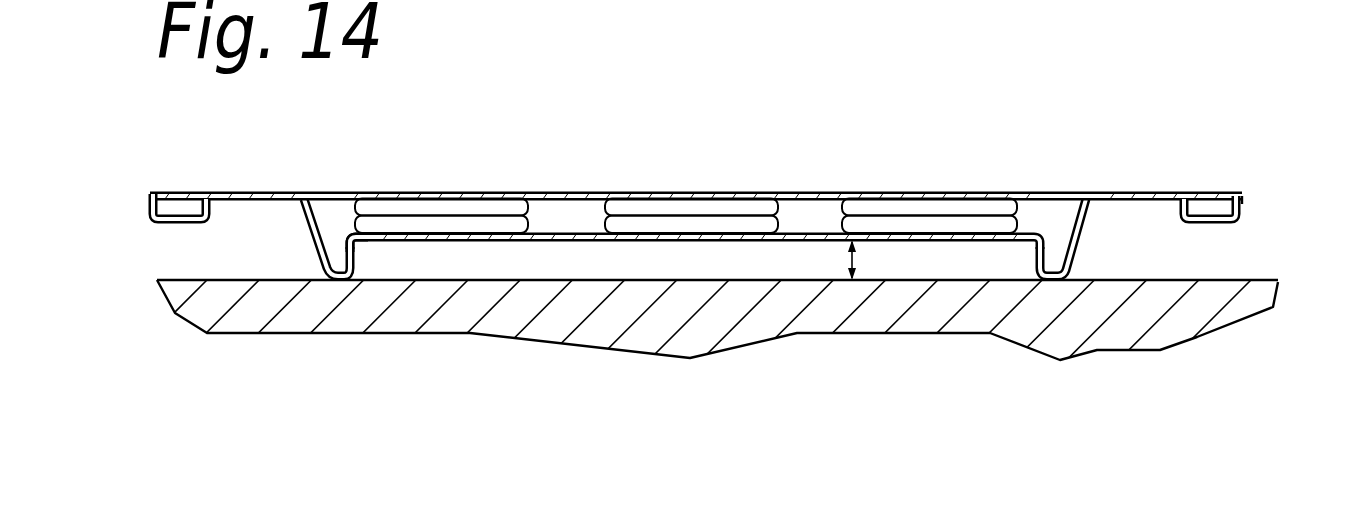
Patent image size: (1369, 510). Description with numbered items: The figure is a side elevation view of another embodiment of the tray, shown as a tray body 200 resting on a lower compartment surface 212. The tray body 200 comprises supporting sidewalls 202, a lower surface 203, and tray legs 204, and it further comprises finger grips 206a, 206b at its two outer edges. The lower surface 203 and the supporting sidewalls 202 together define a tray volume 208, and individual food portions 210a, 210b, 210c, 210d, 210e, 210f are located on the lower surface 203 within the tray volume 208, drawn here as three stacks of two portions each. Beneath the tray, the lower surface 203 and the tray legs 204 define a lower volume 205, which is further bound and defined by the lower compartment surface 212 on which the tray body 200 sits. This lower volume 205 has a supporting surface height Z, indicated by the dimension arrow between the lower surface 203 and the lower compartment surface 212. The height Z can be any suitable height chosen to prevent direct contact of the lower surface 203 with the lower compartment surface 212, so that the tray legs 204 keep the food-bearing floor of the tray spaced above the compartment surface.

The tray body 200 is at (1102, 128).
The supporting sidewalls 202 is at (303, 223).
The lower surface 203 is at (1020, 241).
The tray legs 204 is at (354, 247).
The lower volume 205 is at (508, 272).
The finger grip 206a is at (181, 208).
The finger grip 206b is at (1212, 207).
The tray volume 208 is at (588, 226).
The individual food portion 210a is at (442, 205).
The individual food portion 210b is at (467, 221).
The individual food portion 210c is at (708, 205).
The individual food portion 210d is at (735, 222).
The individual food portion 210e is at (962, 205).
The individual food portion 210f is at (987, 222).
The lower compartment surface 212 is at (810, 320).
The supporting surface height Z is at (849, 256).